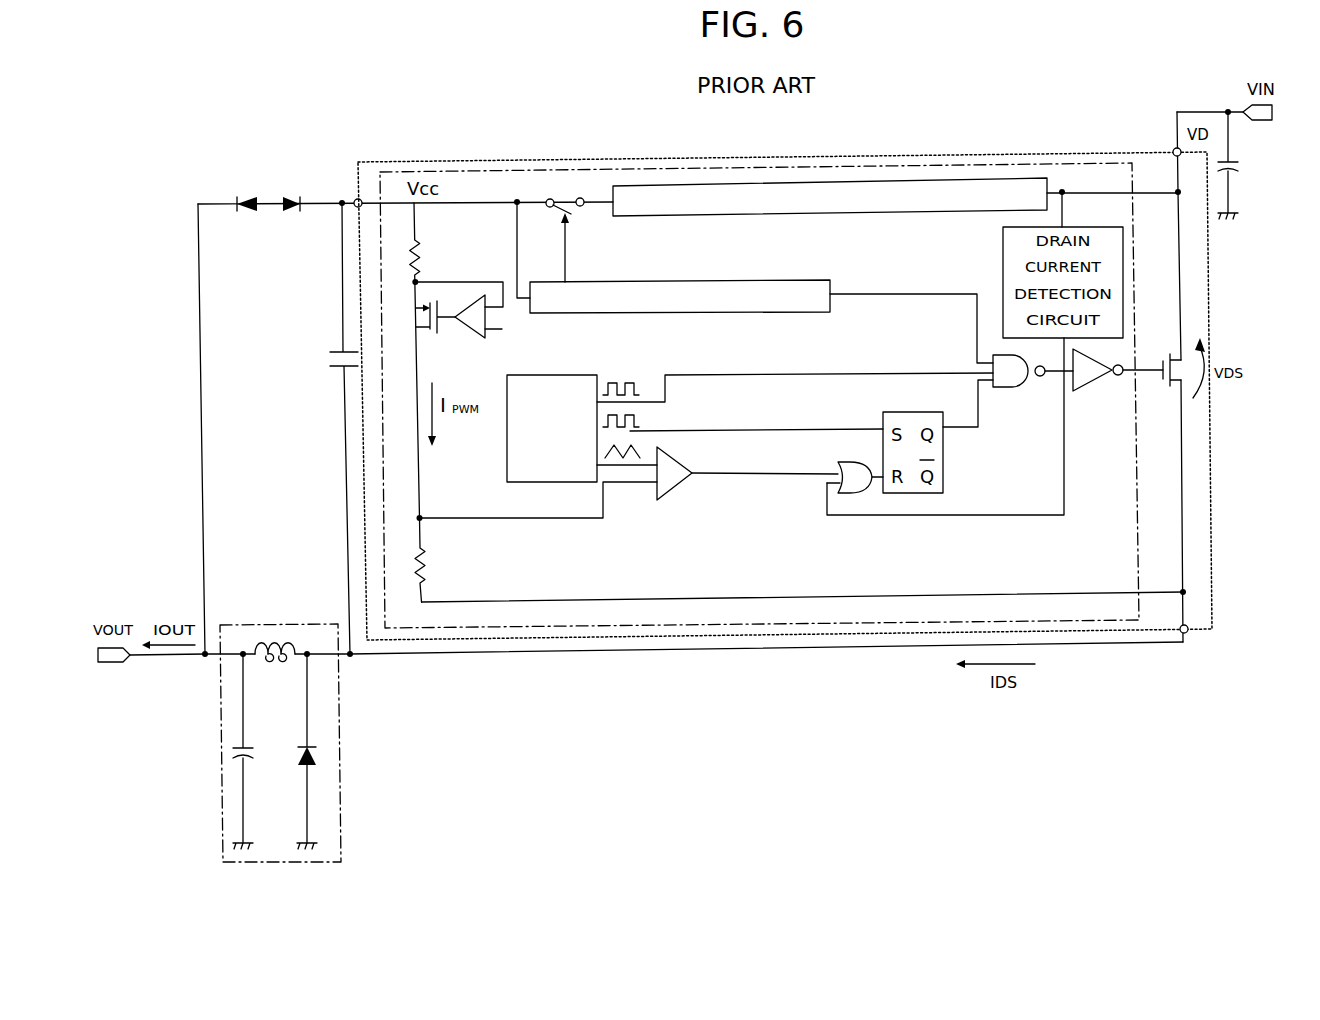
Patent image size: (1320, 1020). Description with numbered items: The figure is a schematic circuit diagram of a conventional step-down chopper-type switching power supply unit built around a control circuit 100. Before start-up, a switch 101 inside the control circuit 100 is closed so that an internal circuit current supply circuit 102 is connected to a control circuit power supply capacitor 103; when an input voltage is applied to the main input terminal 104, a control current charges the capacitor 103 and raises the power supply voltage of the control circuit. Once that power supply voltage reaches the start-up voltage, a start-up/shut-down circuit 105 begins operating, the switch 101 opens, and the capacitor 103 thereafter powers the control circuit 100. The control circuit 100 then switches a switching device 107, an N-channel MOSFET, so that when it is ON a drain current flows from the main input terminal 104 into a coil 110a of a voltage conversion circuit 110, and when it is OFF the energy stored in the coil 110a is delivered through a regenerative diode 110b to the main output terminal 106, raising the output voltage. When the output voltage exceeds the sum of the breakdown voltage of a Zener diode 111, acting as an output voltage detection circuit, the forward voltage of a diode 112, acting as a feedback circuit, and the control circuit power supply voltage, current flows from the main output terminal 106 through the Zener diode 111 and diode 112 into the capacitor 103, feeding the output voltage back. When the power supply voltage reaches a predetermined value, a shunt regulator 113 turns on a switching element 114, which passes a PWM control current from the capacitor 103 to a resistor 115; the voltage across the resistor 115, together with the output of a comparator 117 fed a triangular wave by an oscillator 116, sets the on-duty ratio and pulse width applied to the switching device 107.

The control circuit 100 is at (583, 165).
The switch 101 is at (583, 206).
The internal circuit current supply circuit 102 is at (915, 212).
The control circuit power supply capacitor 103 is at (337, 368).
The main input terminal 104 is at (1258, 121).
The start-up/shut-down circuit 105 is at (600, 314).
The main output terminal 106 is at (113, 663).
The switching device 107 is at (1172, 386).
The voltage conversion circuit 110 is at (273, 622).
The coil 110a is at (275, 660).
The regenerative diode 110b is at (300, 757).
The Zener diode 111 is at (240, 212).
The diode 112 is at (293, 212).
The shunt regulator 113 is at (490, 340).
The switching element 114 is at (442, 338).
The resistor 115 is at (424, 560).
The oscillator 116 is at (507, 465).
The comparator 117 is at (675, 492).